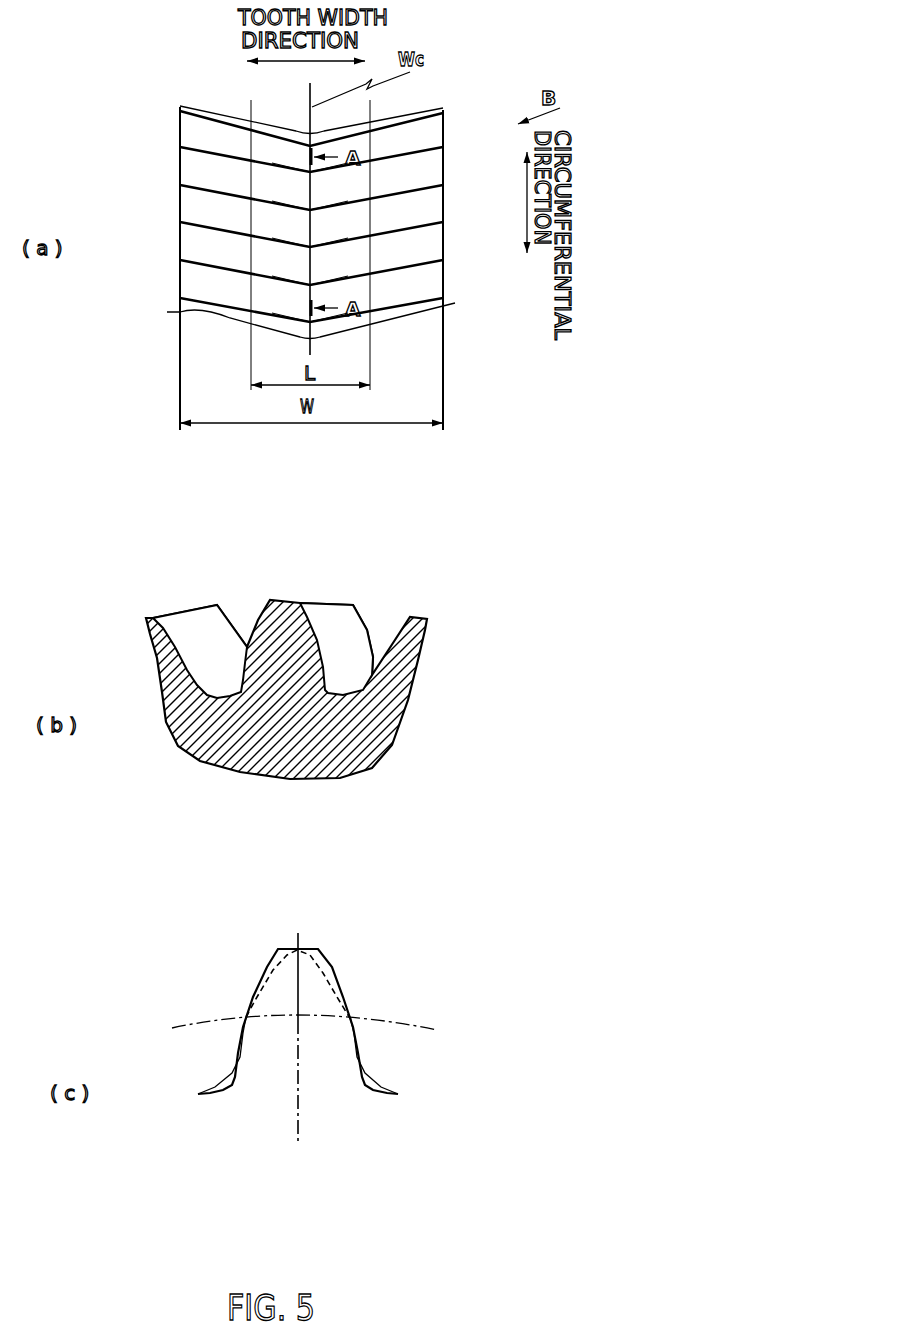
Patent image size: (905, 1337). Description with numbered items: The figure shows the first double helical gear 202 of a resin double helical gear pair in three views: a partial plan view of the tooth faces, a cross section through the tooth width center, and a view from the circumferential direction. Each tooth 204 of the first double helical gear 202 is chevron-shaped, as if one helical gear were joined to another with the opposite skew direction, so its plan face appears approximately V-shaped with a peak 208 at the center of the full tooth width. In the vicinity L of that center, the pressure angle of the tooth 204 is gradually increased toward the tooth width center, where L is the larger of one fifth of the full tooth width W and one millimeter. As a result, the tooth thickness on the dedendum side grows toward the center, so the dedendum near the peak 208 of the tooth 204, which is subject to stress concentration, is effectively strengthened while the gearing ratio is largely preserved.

The first double helical gear 202 is at (177, 128).
The tooth 204 is at (432, 127).
The peak 208 is at (310, 173).